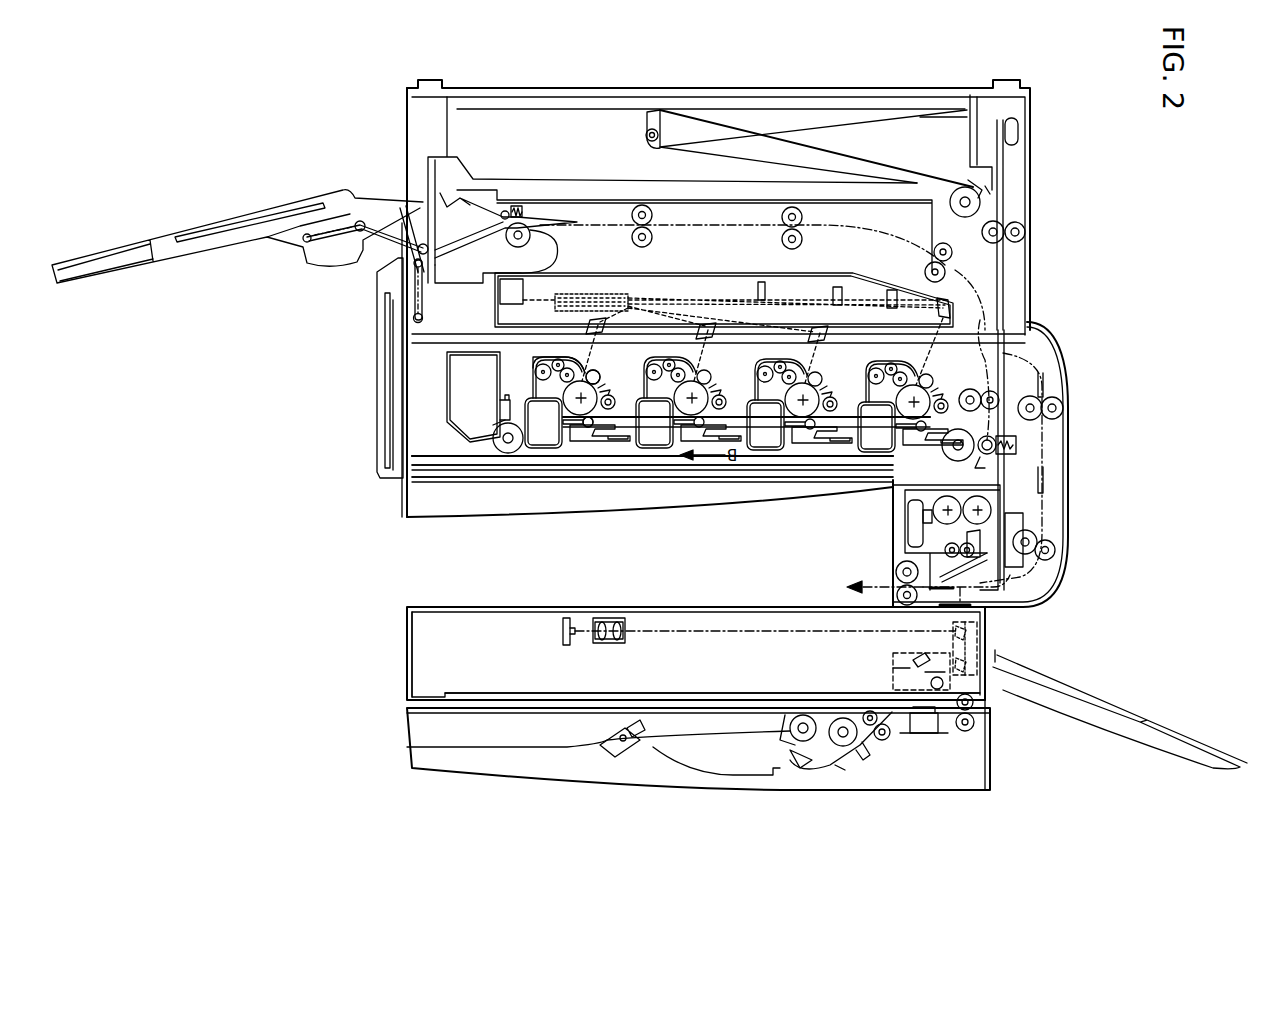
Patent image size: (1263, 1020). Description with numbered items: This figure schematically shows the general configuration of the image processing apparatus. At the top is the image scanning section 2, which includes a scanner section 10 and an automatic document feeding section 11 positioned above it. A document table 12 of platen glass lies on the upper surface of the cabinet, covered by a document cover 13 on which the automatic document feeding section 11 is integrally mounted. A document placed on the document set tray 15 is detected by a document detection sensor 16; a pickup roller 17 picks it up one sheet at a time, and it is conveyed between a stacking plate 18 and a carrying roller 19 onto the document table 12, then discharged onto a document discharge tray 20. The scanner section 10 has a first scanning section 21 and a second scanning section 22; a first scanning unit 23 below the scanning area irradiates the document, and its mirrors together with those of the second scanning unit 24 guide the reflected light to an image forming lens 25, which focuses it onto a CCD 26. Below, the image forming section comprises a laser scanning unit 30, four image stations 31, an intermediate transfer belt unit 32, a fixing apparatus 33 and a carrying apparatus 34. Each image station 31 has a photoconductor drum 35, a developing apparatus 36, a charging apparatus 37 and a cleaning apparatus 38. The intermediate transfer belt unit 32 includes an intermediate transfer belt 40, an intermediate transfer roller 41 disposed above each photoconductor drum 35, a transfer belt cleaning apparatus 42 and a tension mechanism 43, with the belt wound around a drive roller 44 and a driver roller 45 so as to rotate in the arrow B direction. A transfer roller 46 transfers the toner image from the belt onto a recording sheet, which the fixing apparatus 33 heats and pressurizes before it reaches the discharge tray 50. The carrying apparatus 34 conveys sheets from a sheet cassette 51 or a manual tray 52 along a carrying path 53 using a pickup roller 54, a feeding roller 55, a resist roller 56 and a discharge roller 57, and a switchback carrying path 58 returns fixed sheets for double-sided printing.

The image scanning section 2 is at (336, 692).
The scanner section 10 is at (440, 605).
The automatic document feeding section 11 is at (416, 737).
The document table 12 is at (493, 697).
The document cover 13 is at (992, 768).
The document set tray 15 is at (753, 776).
The document detection sensor 16 is at (606, 758).
The pickup roller 17 is at (842, 675).
The stacking plate 18 is at (870, 768).
The carrying roller 19 is at (842, 717).
The document discharge tray 20 is at (1163, 748).
The first scanning section 21 is at (427, 637).
The second scanning section 22 is at (927, 735).
The first scanning unit 23 is at (893, 658).
The second scanning unit 24 is at (980, 640).
The image forming lens 25 is at (606, 643).
The CCD 26 is at (565, 645).
The laser scanning unit 30 is at (668, 278).
The image station 31 is at (549, 455).
The intermediate transfer belt unit 32 is at (490, 454).
The fixing apparatus 33 is at (992, 503).
The carrying apparatus 34 is at (1033, 306).
The photoconductor drum 35 is at (795, 405).
The developing apparatus 36 is at (540, 358).
The charging apparatus 37 is at (710, 378).
The cleaning apparatus 38 is at (601, 380).
The intermediate transfer belt 40 is at (650, 462).
The intermediate transfer roller 41 is at (589, 428).
The transfer belt cleaning apparatus 42 is at (470, 422).
The tension mechanism 43 is at (828, 447).
The drive roller 44 is at (942, 449).
The driver roller 45 is at (507, 456).
The transfer roller 46 is at (990, 436).
The discharge tray 50 is at (940, 478).
The sheet cassette 51 is at (905, 148).
The manual tray 52 is at (272, 242).
The carrying path 53 is at (947, 262).
The pickup roller 54 is at (951, 200).
The feeding roller 55 is at (632, 237).
The resist roller 56 is at (970, 388).
The discharge roller 57 is at (896, 596).
The switchback carrying path 58 is at (1045, 452).